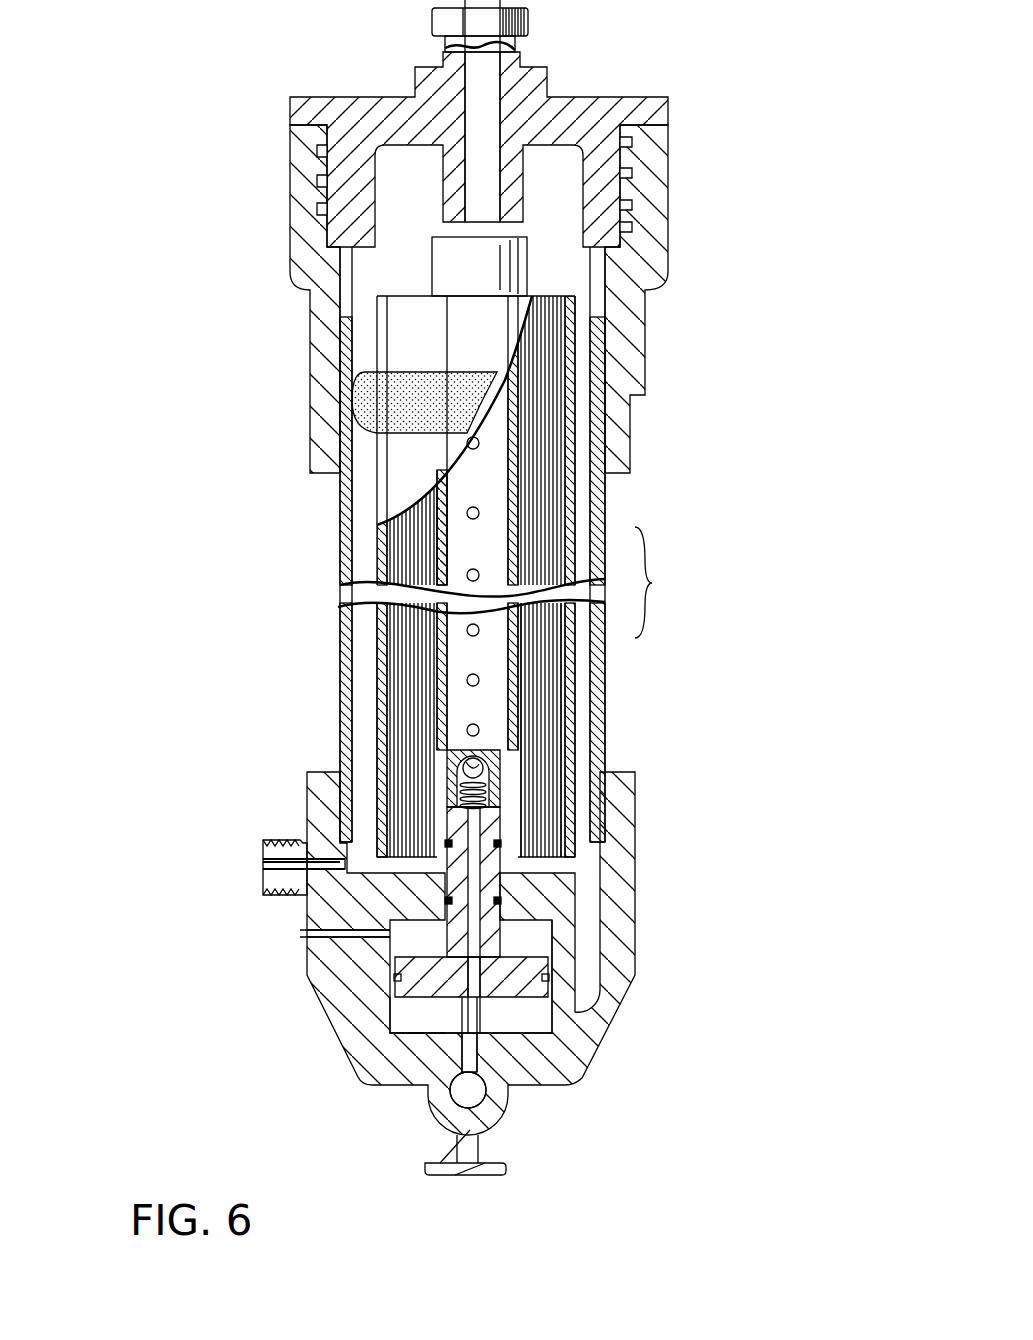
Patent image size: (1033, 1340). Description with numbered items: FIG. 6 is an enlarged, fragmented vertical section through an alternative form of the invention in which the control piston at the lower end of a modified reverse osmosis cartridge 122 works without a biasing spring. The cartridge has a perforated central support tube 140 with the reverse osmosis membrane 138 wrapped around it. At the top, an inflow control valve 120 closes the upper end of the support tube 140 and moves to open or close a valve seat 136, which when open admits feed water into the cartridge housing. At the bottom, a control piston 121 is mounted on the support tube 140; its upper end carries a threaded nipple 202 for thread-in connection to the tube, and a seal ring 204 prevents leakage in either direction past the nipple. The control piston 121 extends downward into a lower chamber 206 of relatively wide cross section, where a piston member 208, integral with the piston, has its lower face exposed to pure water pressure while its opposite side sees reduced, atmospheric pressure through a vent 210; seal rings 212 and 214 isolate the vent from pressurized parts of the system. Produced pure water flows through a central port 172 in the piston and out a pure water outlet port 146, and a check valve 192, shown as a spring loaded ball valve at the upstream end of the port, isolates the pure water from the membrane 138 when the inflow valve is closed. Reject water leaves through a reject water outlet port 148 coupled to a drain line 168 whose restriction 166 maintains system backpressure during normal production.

The valve seat 136 is at (437, 180).
The inflow control valve 120 is at (443, 265).
The reverse osmosis cartridge 122 is at (538, 530).
The central support tube 140 is at (450, 533).
The check valve 192 is at (465, 752).
The reverse osmosis membrane 138 is at (545, 738).
The threaded nipple 202 is at (507, 813).
The seal ring 204 is at (501, 845).
The control piston 121 is at (500, 900).
The seal ring 212 is at (495, 884).
The seal ring 214 is at (549, 977).
The restriction 166 is at (178, 867).
The drain line 168 is at (235, 877).
The reject water outlet port 148 is at (297, 893).
The vent 210 is at (335, 937).
The piston member 208 is at (392, 1012).
The central port 172 is at (472, 995).
The lower chamber 206 is at (495, 1010).
The pure water outlet port 146 is at (455, 1108).